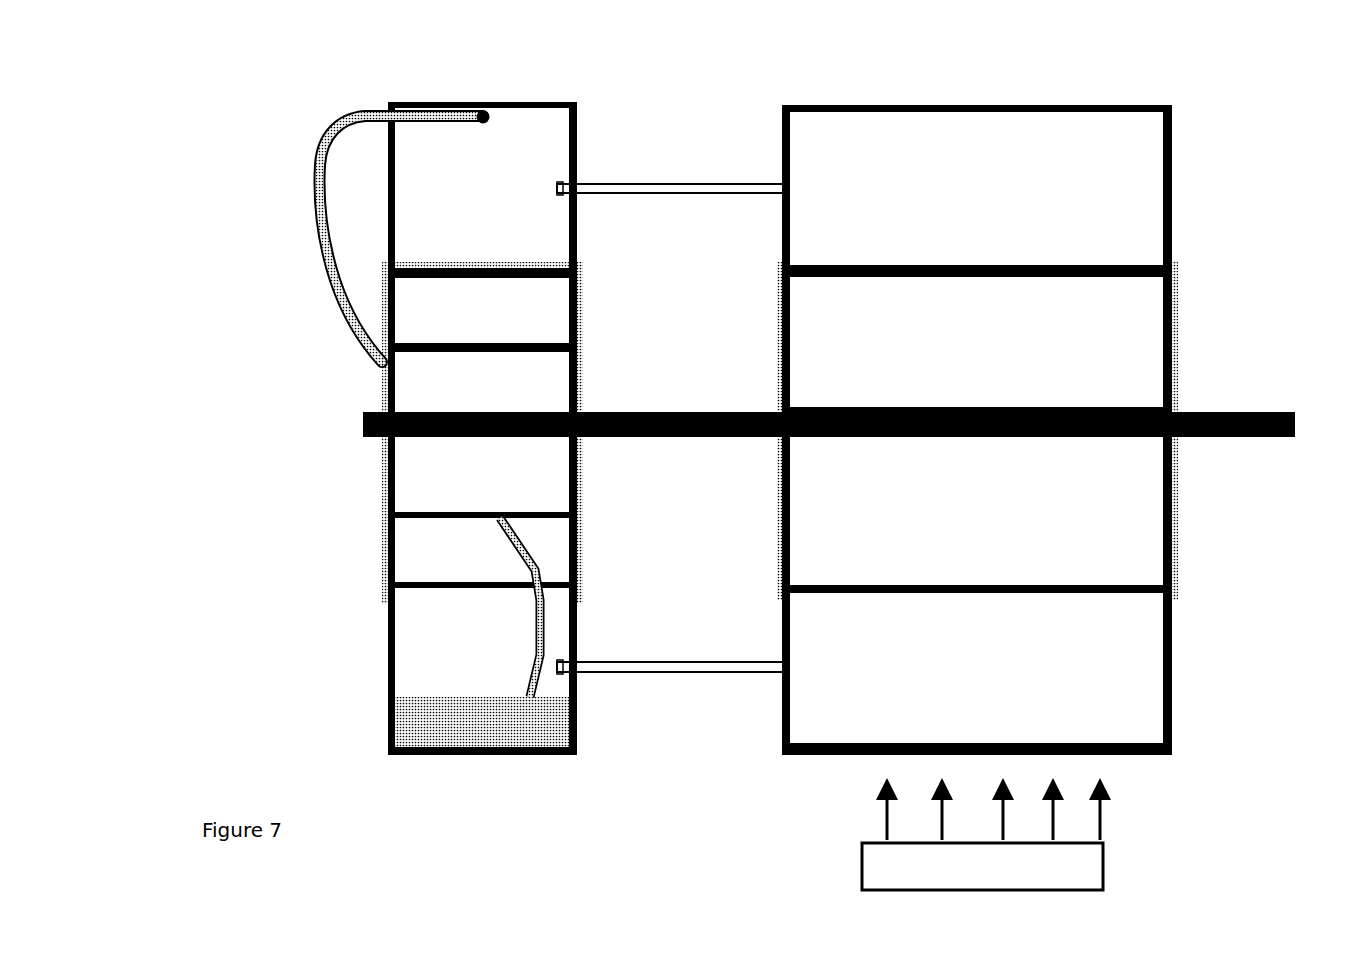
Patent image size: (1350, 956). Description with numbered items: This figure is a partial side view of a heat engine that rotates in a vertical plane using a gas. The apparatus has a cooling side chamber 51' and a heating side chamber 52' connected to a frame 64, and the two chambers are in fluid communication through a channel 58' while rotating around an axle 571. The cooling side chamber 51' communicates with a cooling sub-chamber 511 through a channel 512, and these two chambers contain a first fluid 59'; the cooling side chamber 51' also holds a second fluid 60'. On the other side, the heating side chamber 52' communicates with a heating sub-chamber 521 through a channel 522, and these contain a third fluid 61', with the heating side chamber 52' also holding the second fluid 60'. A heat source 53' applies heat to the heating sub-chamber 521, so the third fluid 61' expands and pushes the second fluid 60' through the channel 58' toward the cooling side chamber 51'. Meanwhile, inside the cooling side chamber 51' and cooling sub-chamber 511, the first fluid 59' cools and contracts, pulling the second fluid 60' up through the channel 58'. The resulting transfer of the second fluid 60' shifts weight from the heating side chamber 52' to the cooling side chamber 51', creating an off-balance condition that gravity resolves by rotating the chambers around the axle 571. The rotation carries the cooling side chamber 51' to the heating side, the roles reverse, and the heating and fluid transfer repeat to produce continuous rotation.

The cooling side chamber 51' is at (504, 153).
The first fluid 59' is at (605, 117).
The second fluid 60' is at (391, 473).
The channel 58' is at (289, 237).
The frame 64 is at (380, 478).
The heating side chamber 52' is at (392, 636).
The third fluid 61' is at (313, 675).
The channel 512 is at (712, 183).
The channel 522 is at (680, 678).
The cooling sub-chamber 511 is at (1172, 177).
The heating sub-chamber 521 is at (1172, 680).
The axle 571 is at (1270, 444).
The heat source 53' is at (1051, 834).